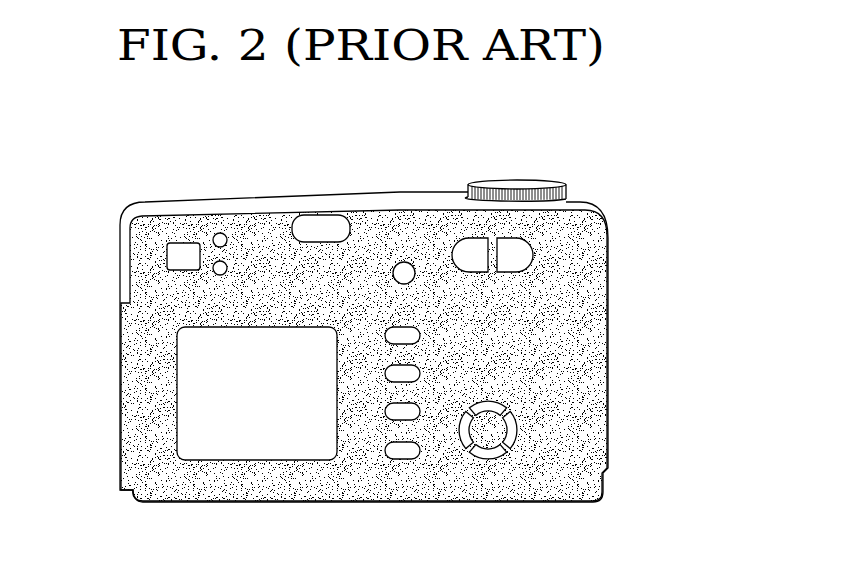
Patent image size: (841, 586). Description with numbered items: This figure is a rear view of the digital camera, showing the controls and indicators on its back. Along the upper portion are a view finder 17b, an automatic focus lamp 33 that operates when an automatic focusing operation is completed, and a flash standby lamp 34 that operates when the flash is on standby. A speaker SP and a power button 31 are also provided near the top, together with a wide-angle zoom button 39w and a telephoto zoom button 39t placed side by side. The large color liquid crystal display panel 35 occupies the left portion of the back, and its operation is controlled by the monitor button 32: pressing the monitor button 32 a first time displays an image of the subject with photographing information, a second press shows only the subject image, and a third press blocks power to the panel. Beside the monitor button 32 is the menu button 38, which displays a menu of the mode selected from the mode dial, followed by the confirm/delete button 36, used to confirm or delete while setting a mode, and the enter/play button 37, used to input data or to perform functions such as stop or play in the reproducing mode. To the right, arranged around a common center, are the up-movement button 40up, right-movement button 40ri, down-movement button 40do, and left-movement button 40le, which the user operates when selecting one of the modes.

The view finder 17b is at (181, 245).
The automatic focus lamp 33 is at (220, 233).
The flash standby lamp 34 is at (215, 275).
The speaker SP is at (320, 221).
The power button 31 is at (406, 270).
The wide-angle zoom button 39w is at (469, 252).
The telephoto zoom button 39t is at (513, 250).
The color liquid crystal display (LCD) panel 35 is at (258, 443).
The monitor button 32 is at (420, 335).
The menu button 38 is at (420, 373).
The confirm/delete button 36 is at (390, 418).
The enter/play button 37 is at (402, 455).
The up-movement button 40up is at (500, 407).
The right-movement button 40ri is at (517, 428).
The down-movement button 40do is at (487, 458).
The left-movement button 40le is at (463, 451).